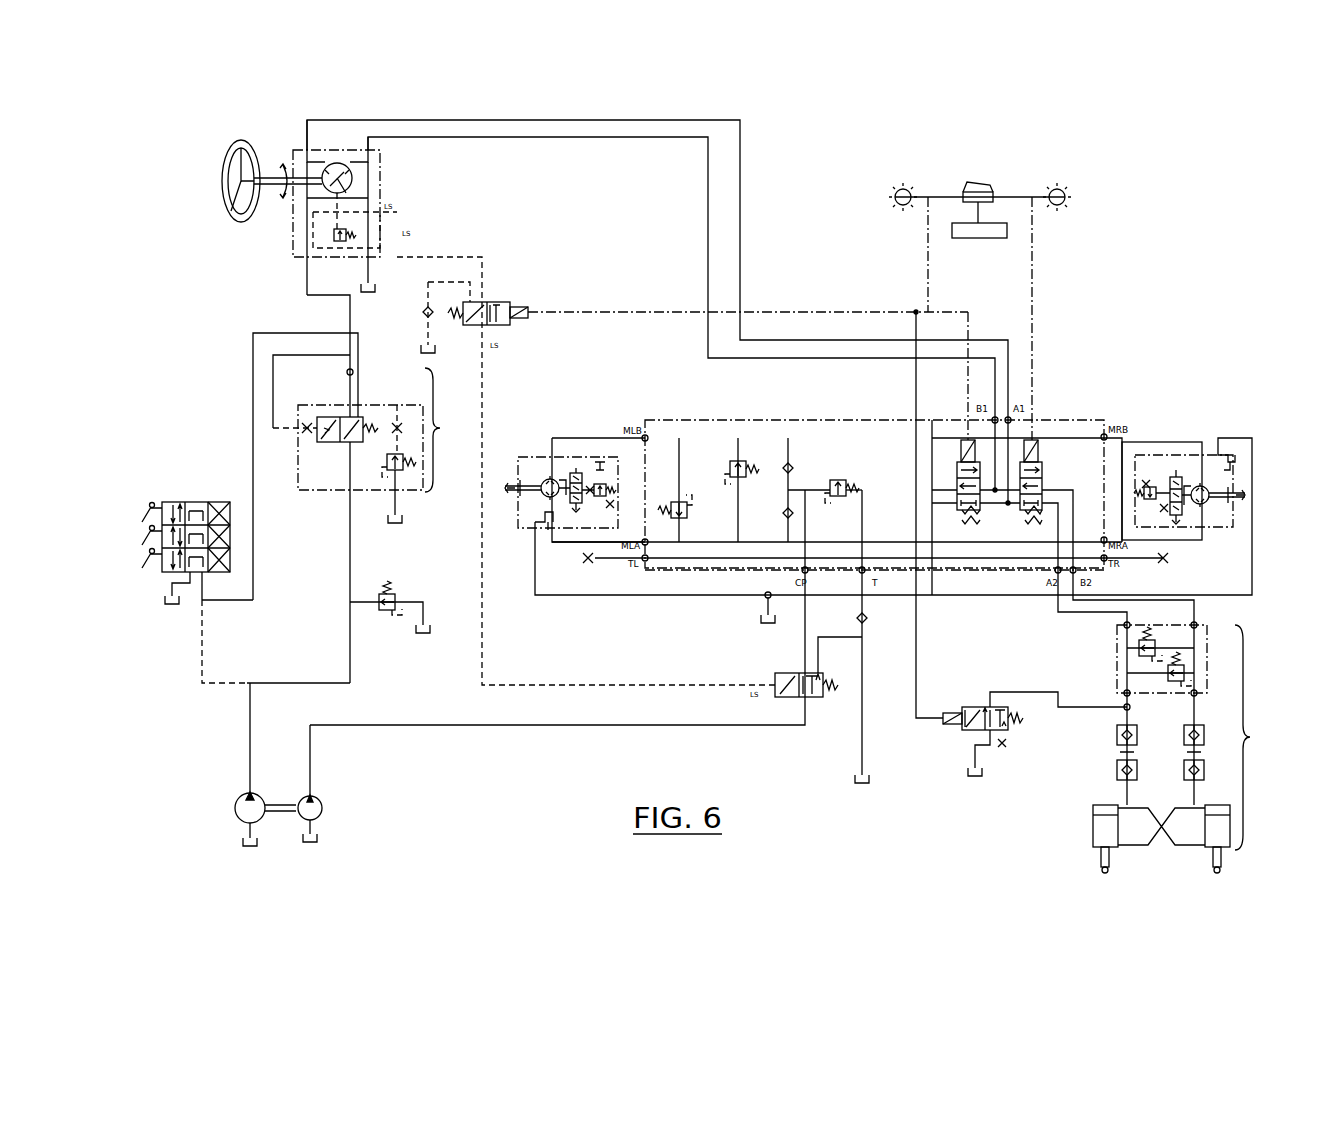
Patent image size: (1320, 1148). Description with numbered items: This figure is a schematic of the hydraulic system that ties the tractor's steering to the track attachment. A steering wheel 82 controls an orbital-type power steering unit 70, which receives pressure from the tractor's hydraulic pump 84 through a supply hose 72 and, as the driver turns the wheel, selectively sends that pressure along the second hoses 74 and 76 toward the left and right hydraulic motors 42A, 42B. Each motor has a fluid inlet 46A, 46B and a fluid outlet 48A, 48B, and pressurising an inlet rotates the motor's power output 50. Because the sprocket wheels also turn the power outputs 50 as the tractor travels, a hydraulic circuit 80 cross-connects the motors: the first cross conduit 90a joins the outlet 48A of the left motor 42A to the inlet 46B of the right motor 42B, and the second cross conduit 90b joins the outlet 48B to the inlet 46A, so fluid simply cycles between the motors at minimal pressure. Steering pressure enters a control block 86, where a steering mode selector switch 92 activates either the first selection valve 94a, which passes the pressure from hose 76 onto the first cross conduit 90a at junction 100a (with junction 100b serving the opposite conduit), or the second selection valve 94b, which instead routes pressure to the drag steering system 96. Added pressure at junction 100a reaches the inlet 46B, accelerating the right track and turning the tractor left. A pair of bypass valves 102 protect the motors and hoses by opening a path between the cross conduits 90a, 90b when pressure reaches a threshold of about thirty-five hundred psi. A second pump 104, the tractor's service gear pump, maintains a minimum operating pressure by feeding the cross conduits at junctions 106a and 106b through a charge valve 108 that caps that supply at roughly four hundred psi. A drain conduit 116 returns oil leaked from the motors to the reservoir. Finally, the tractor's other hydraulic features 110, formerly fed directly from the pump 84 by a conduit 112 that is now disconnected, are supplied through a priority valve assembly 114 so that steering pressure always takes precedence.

The steering wheel 82 is at (240, 133).
The steering mechanism 70 is at (381, 160).
The supply hose 72 is at (305, 272).
The second hose 74 is at (497, 120).
The second hose 76 is at (557, 140).
The steering mode selector switch 92 is at (975, 192).
The hydraulic features 110 is at (193, 460).
The conduit 112 is at (208, 645).
The priority valve assembly 114 is at (375, 519).
The hydraulic pump 84 is at (235, 806).
The second pump 104 is at (322, 797).
The hydraulic circuit 80 is at (633, 397).
The control block 86 is at (782, 418).
The first cross conduit 90a is at (828, 418).
The second cross conduit 90b is at (1008, 544).
The drain conduit 116 is at (665, 560).
The fluid inlet of left hydraulic motor 46A is at (538, 542).
The fluid outlet of left hydraulic motor 48A is at (545, 458).
The left hydraulic motor 42A is at (578, 458).
The power output 50 is at (505, 487).
The bypass valves 102 is at (720, 447).
The junction 106a is at (760, 418).
The junction 106b is at (787, 544).
The charge valve 108 is at (841, 533).
The junction 100a is at (932, 420).
The junction 100b is at (933, 597).
The first selection valve 94a is at (957, 468).
The second selection valve 94b is at (1048, 468).
The fluid inlet of right hydraulic motor 46B is at (1202, 538).
The fluid outlet of right hydraulic motor 48B is at (1203, 456).
The right hydraulic motor 42B is at (1165, 455).
The drag steering system 96 is at (1110, 747).